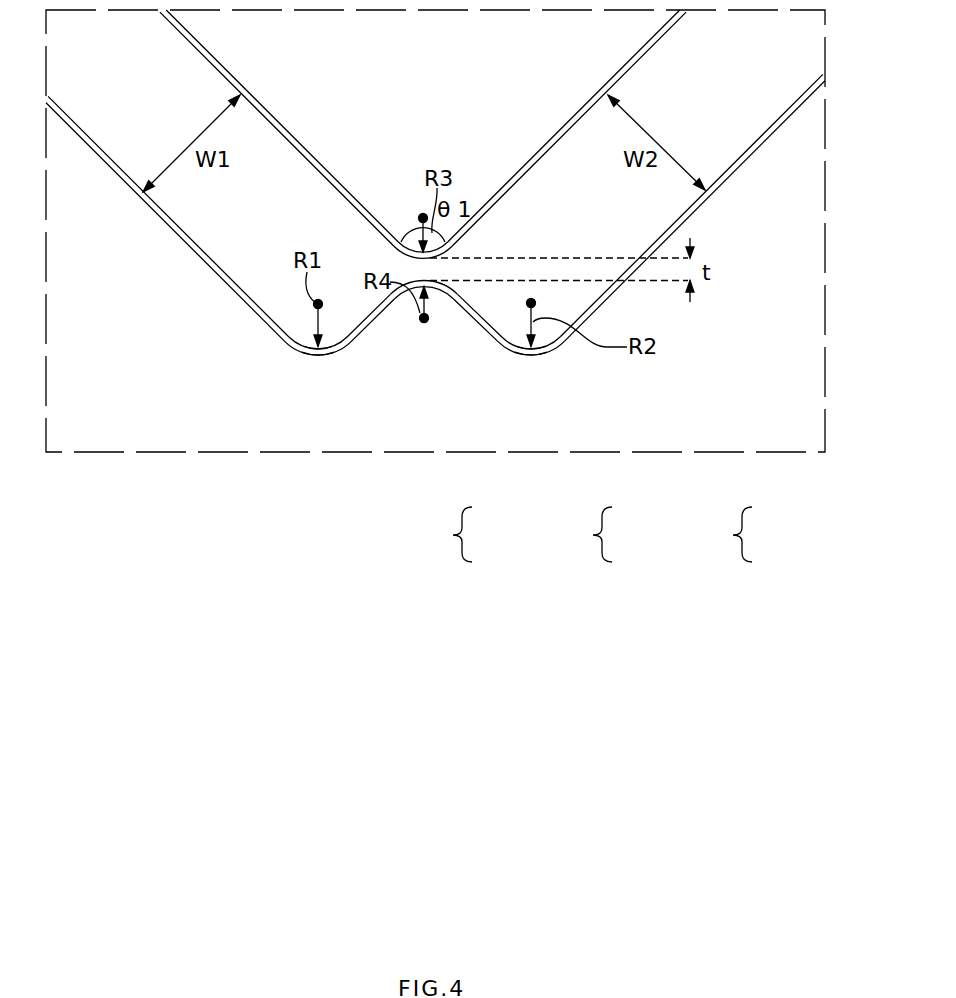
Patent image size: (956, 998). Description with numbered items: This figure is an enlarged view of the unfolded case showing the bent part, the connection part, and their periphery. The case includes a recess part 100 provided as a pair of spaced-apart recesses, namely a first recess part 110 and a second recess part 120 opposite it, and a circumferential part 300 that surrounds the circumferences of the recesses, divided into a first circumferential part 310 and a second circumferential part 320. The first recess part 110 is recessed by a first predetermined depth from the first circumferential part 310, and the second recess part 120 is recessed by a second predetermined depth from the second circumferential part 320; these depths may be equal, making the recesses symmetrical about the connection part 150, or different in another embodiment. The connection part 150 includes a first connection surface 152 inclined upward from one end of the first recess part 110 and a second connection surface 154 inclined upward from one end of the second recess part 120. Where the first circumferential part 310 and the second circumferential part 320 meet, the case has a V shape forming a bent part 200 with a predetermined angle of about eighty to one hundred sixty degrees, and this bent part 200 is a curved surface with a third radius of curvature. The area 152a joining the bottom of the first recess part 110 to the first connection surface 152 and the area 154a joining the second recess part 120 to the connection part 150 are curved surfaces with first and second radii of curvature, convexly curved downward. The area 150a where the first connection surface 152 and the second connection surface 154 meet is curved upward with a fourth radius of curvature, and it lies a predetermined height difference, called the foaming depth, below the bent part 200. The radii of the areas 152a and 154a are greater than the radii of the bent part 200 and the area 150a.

The recess part 100 is at (465, 540).
The first recess part 110 is at (177, 233).
The second recess part 120 is at (693, 212).
The connection part 150 is at (744, 540).
The third area 150a is at (431, 298).
The first connection surface 152 is at (370, 338).
The first area 152a is at (317, 357).
The second connection surface 154 is at (482, 331).
The first area 154a is at (532, 357).
The bent part 200 is at (420, 257).
The circumferential part 300 is at (604, 540).
The first circumferential part 310 is at (278, 122).
The second circumferential part 320 is at (577, 118).